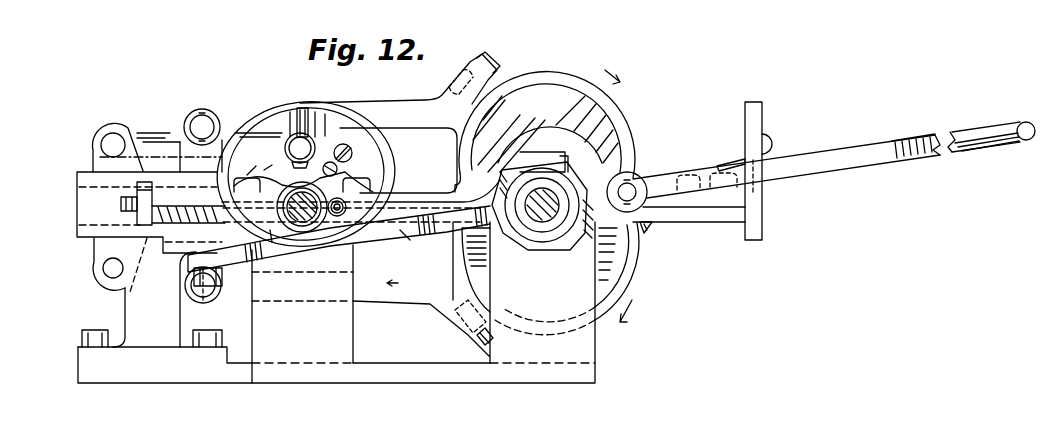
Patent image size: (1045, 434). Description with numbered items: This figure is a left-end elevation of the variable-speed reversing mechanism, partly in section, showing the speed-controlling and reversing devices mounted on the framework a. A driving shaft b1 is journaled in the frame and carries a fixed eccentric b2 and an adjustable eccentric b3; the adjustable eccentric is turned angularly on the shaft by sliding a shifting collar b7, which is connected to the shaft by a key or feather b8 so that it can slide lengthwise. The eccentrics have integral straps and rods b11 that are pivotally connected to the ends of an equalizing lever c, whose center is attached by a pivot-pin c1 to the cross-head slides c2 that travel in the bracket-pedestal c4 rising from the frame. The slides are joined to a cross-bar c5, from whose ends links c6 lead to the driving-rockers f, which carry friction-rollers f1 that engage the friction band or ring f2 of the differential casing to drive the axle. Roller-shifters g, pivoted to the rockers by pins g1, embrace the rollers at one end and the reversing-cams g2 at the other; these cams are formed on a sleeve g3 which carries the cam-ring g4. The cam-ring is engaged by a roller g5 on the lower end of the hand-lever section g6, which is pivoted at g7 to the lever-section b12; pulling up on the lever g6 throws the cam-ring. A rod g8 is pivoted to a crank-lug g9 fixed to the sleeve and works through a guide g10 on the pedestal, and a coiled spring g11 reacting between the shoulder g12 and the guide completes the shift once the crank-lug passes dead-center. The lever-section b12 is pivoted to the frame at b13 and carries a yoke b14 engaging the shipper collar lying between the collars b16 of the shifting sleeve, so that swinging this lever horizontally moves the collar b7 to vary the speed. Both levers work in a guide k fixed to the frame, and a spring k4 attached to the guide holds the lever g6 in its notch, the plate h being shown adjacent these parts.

The framework a is at (298, 375).
The driving shaft b1 is at (486, 222).
The fixed eccentric b2 is at (601, 118).
The adjustable eccentric b3 is at (618, 262).
The shifting collar b7 is at (560, 186).
The key or feather b8 is at (541, 232).
The eccentric straps and rods b11 is at (412, 302).
The lever-section b12 is at (266, 314).
The pivot of lever-section b13 is at (203, 296).
The yoke b14 is at (518, 236).
The collars of shifter sleeve b16 is at (566, 228).
The equalizing lever c is at (187, 162).
The pivot-pin c1 is at (245, 170).
The cross-head slides c2 is at (137, 193).
The bracket-pedestal c4 is at (121, 306).
The cross-bar c5 is at (97, 256).
The links c6 is at (152, 143).
The driving-rockers f is at (264, 166).
The friction-rollers f1 is at (350, 151).
The friction band or ring f2 is at (404, 238).
The roller-shifters g is at (328, 160).
The pin g1 is at (440, 99).
The reversing-cams g2 is at (834, 172).
The sleeve g3 is at (268, 236).
The cam-ring g4 is at (398, 153).
The roller g5 is at (338, 216).
The hand-lever section g6 is at (445, 232).
The pivotal connection of lever-sections g7 is at (631, 190).
The rod g8 is at (121, 201).
The crank-lug g9 is at (302, 232).
The guide g10 is at (213, 204).
The coiled spring g11 is at (339, 239).
The shoulder g12 is at (220, 280).
The plate h is at (303, 171).
The guide k is at (760, 210).
The spring k4 is at (724, 163).